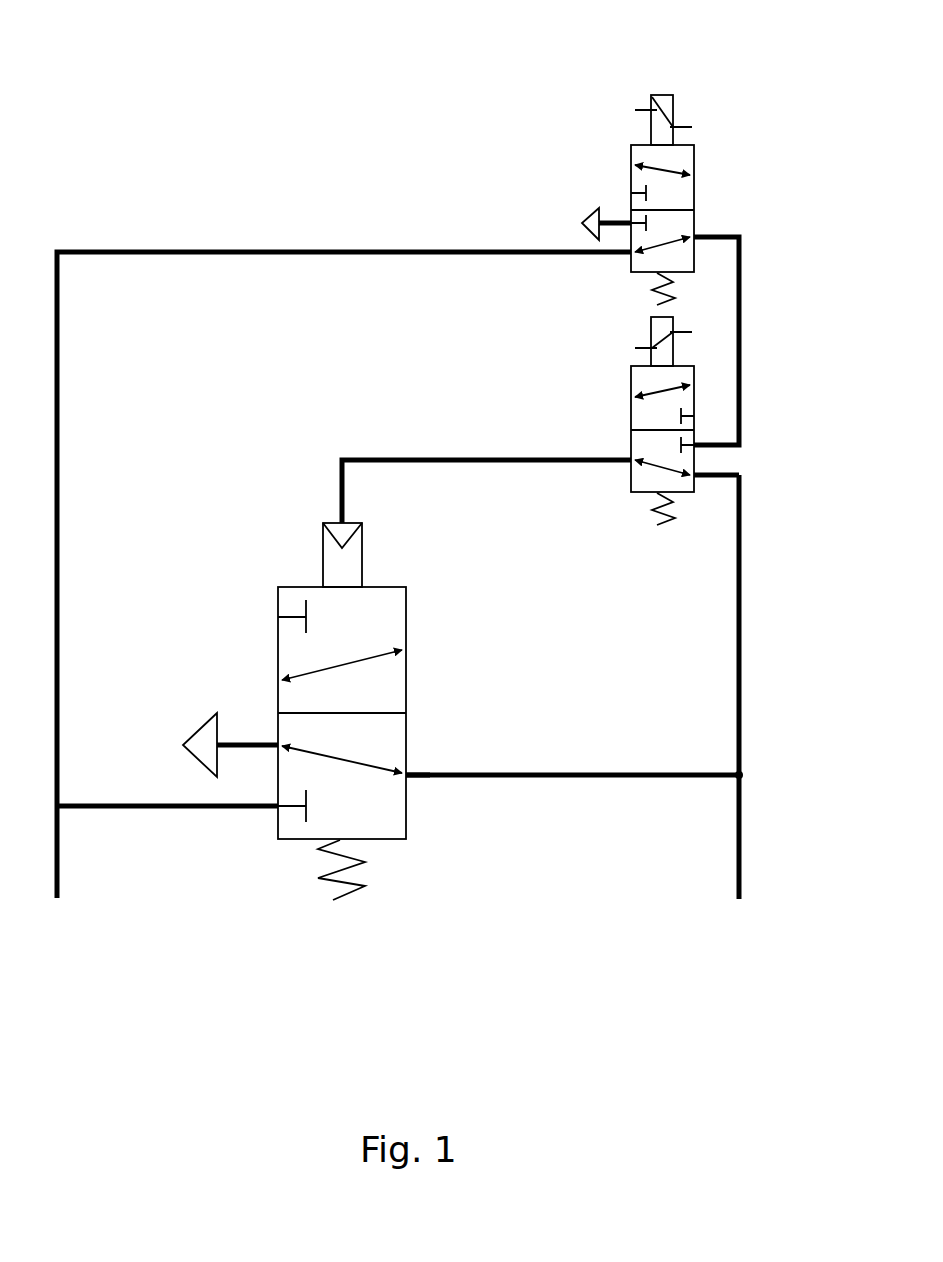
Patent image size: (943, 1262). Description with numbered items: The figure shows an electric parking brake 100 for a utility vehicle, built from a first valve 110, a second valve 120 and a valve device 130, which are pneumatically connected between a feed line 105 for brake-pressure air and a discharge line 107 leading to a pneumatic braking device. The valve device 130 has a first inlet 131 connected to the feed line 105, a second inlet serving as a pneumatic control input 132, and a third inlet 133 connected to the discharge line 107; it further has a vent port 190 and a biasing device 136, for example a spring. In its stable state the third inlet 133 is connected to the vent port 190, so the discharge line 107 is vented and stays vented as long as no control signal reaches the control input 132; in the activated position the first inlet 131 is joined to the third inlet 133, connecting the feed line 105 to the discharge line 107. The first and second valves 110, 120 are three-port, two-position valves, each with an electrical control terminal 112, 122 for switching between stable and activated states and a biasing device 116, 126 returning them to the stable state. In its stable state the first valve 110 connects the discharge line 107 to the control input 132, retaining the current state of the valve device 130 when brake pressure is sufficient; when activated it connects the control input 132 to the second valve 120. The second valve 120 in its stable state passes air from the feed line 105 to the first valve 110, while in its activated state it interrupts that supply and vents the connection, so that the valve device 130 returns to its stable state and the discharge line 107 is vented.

The electric parking brake 100 is at (165, 152).
The feed line 105 is at (60, 887).
The discharge line 107 is at (735, 877).
The first 3/2-way valve 110 is at (630, 407).
The electrical control terminal 112 is at (660, 337).
The biasing device 116 is at (675, 507).
The second 3/2-way valve 120 is at (629, 177).
The electrical control terminal 122 is at (653, 102).
The biasing device 126 is at (675, 297).
The valve device 130 is at (410, 613).
The first inlet 131 is at (270, 808).
The control input 132 is at (353, 562).
The third inlet 133 is at (422, 777).
The biasing device 136 is at (358, 882).
The vent port 190 is at (583, 222).